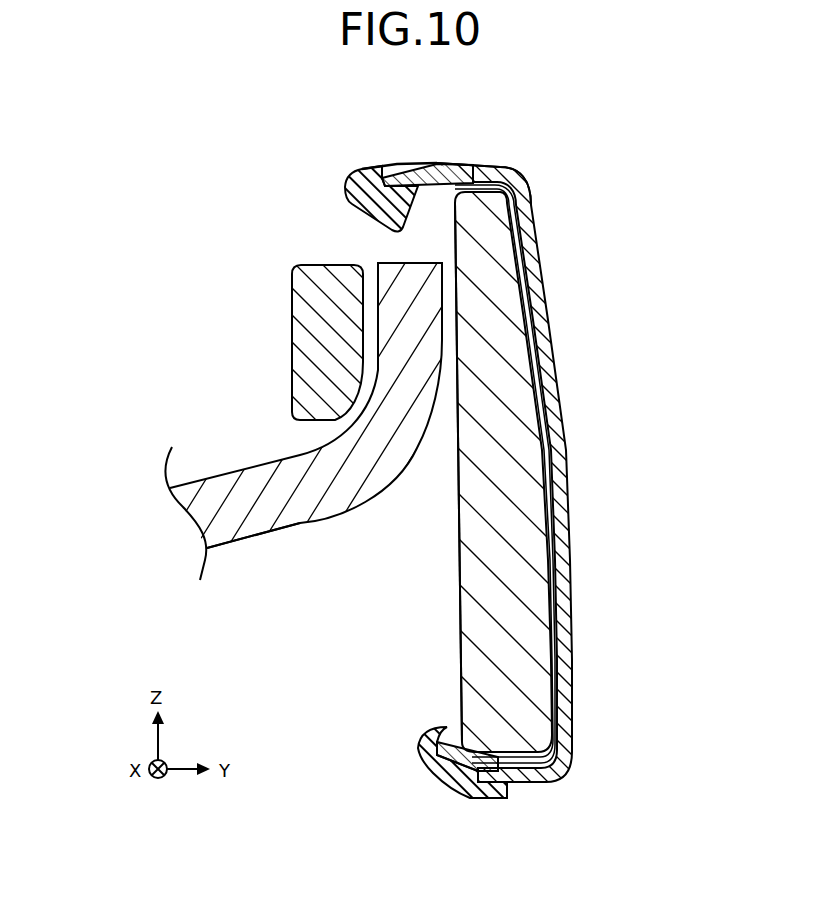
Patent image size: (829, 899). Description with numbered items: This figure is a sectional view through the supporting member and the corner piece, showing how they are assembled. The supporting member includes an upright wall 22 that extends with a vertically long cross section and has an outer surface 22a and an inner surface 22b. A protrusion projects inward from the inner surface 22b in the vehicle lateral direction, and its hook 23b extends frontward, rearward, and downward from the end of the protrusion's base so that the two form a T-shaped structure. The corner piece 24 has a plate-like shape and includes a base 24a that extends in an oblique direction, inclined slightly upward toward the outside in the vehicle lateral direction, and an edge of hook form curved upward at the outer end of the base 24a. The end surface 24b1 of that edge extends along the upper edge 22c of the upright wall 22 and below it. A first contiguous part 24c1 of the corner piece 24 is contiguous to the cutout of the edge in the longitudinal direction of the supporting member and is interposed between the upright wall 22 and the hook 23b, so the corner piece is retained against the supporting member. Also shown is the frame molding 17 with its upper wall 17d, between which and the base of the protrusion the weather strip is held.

The frame molding 17 is at (475, 158).
The upper wall 17d is at (431, 172).
The upright wall 22 is at (558, 452).
The outer surface 22a is at (552, 557).
The inner surface 22b is at (458, 610).
The upper edge 22c is at (495, 185).
The hook 23b is at (305, 363).
The corner piece 24 is at (247, 545).
The base 24a is at (297, 512).
The end surface 24b1 is at (406, 262).
The first contiguous part 24c1 is at (418, 307).